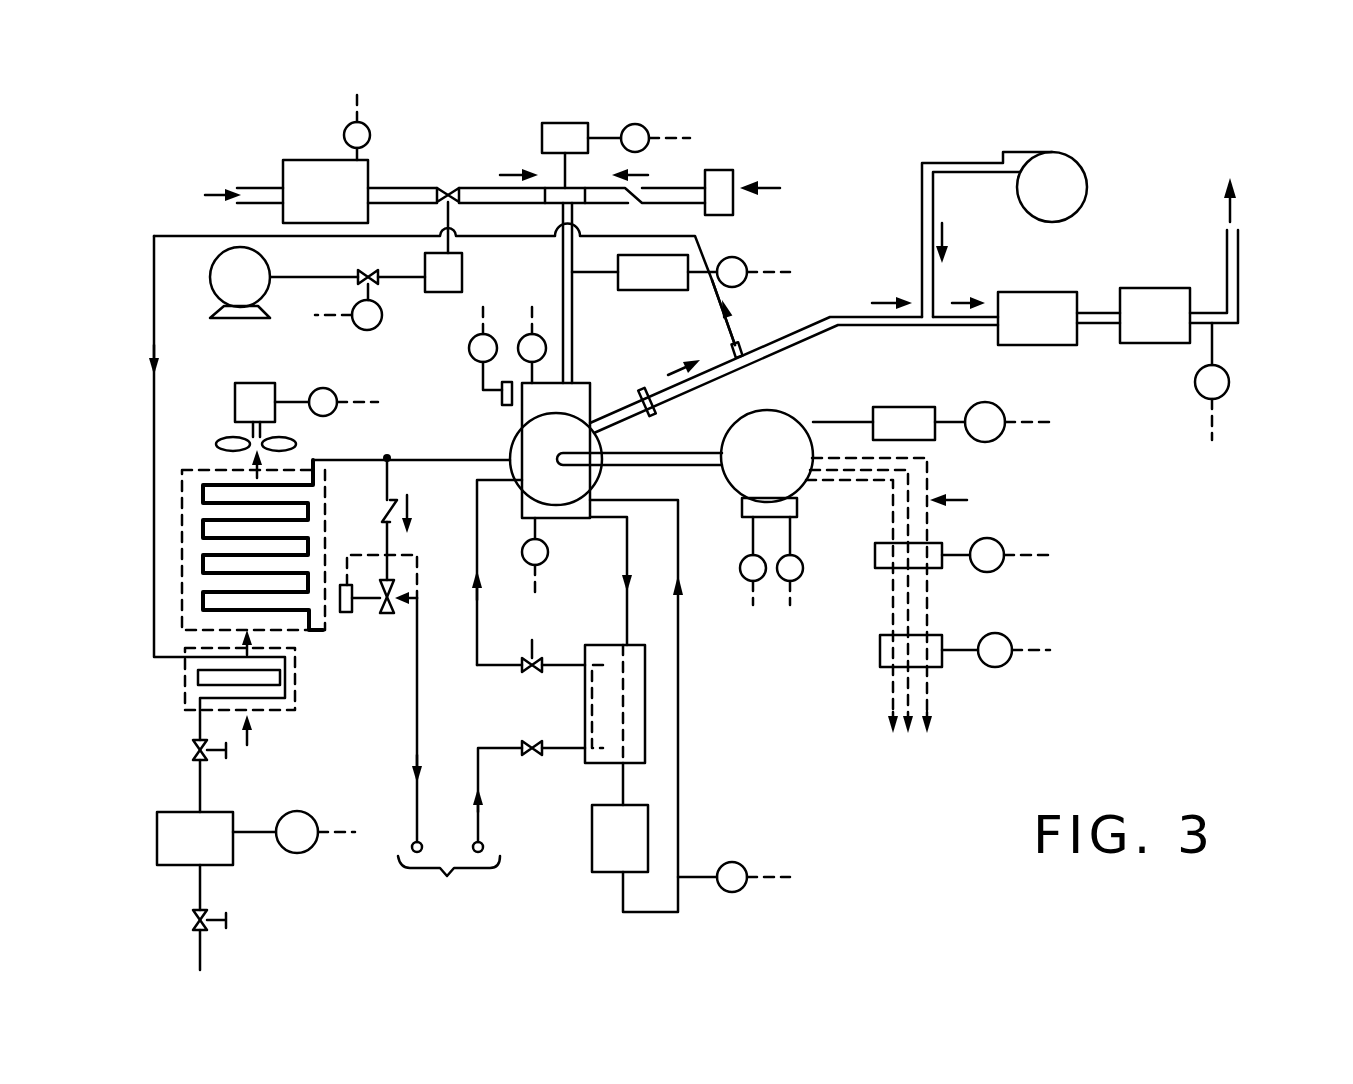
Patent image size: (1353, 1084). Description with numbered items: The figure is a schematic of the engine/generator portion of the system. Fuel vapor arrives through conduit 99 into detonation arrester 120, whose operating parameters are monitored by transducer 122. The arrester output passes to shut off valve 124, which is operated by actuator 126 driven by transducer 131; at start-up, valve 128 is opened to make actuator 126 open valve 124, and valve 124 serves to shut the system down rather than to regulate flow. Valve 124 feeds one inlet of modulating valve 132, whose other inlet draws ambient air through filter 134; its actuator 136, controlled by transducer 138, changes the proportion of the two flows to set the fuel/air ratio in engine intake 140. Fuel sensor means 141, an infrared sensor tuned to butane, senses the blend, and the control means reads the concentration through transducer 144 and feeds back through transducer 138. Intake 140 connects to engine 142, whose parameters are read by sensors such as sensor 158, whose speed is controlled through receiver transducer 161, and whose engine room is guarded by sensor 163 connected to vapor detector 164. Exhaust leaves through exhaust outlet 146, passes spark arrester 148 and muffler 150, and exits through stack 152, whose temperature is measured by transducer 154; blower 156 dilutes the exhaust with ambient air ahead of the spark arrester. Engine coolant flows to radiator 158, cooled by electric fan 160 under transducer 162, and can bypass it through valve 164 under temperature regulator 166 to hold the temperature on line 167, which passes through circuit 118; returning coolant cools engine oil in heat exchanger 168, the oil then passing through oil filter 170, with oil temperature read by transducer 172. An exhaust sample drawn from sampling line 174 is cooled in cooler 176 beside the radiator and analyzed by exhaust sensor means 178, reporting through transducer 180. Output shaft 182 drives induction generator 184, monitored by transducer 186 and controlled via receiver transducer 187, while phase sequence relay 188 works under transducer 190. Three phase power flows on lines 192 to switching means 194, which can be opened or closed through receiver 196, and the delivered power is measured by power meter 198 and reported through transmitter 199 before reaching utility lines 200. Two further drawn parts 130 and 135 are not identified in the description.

The conduit 99 is at (250, 187).
The circuit 118 is at (460, 826).
The detonation arrester 120 is at (297, 160).
The transducer 122 is at (370, 131).
The shut off valve 124 is at (458, 176).
The actuator 126 is at (463, 272).
The valve 128 is at (366, 270).
The pump 130 is at (217, 294).
The transducer 131 is at (380, 322).
The modulating valve 132 is at (555, 205).
The filter 134 is at (733, 172).
The inlet flow 135 is at (780, 188).
The actuator 136 is at (567, 120).
The transducer 138 is at (645, 128).
The engine intake 140 is at (573, 317).
The fuel sensor means 141 is at (648, 291).
The engine 142 is at (510, 447).
The transducer 144 is at (745, 262).
The exhaust outlet 146 is at (615, 405).
The spark arrester 148 is at (1043, 292).
The muffler 150 is at (1137, 345).
The stack 152 is at (1240, 252).
The transducer 154 is at (1228, 375).
The blower 156 is at (1085, 165).
The radiator 158 is at (183, 468).
The electric fan 160 is at (290, 361).
The transducer 161 is at (530, 338).
The transducer 162 is at (333, 390).
The sensor 163 is at (480, 358).
The bypass valve 164 is at (500, 395).
The temperature regulator 166 is at (345, 585).
The line 167 is at (415, 800).
The heat exchanger 168 is at (598, 765).
The oil filter 170 is at (605, 873).
The transducer 172 is at (728, 862).
The sampling line 174 is at (735, 340).
The cooler 176 is at (285, 710).
The exhaust sensor means 178 is at (222, 812).
The transducer 180 is at (300, 853).
The output shaft 182 is at (650, 445).
The induction generator 184 is at (768, 410).
The transducer 186 is at (742, 577).
The transducer 187 is at (802, 575).
The phase sequence relay 188 is at (945, 363).
The transducer 190 is at (998, 437).
The lines 192 is at (967, 500).
The switching means 194 is at (873, 553).
The receiver 196 is at (1000, 633).
The power meter 198 is at (880, 655).
The transmitter 199 is at (995, 667).
The utility lines 200 is at (906, 740).